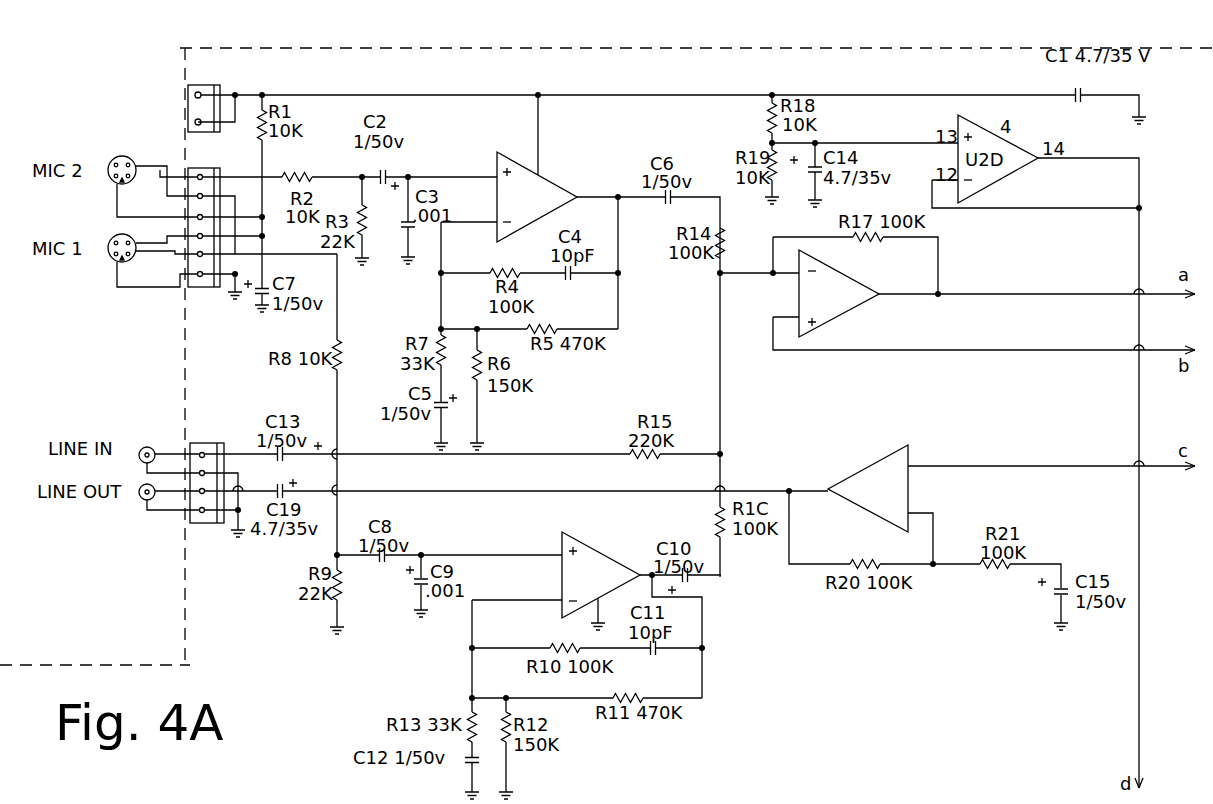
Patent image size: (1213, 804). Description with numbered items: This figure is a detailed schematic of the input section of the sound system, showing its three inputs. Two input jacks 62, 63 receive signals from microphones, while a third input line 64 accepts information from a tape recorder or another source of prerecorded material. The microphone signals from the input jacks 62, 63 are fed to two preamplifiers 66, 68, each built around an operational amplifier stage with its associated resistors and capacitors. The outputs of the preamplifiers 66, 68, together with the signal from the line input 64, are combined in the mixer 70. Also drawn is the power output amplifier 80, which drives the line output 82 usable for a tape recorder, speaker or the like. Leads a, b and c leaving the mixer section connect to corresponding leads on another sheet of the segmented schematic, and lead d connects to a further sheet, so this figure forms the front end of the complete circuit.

The input jack 62 is at (114, 257).
The input jack 63 is at (134, 157).
The input line 64 is at (144, 446).
The preamplifier 66 is at (630, 538).
The preamplifier 68 is at (579, 159).
The mixer 70 is at (881, 317).
The power amplifier 80 is at (853, 448).
The line output 82 is at (143, 501).